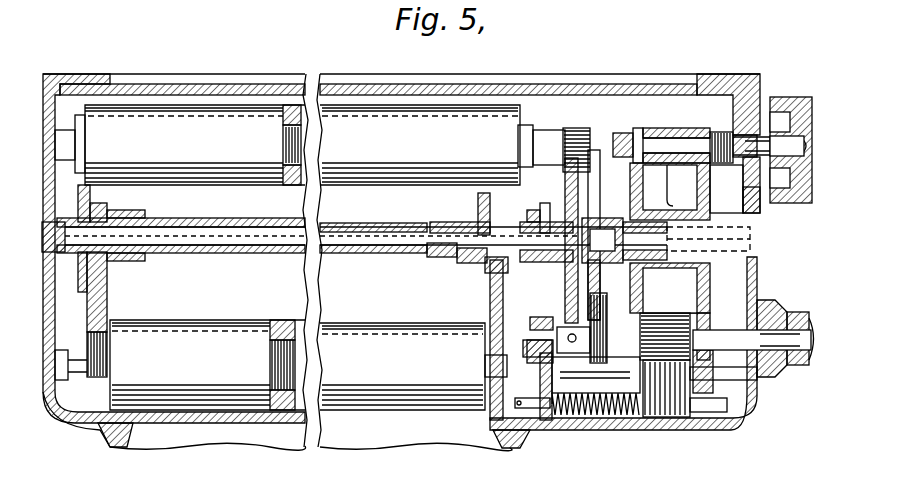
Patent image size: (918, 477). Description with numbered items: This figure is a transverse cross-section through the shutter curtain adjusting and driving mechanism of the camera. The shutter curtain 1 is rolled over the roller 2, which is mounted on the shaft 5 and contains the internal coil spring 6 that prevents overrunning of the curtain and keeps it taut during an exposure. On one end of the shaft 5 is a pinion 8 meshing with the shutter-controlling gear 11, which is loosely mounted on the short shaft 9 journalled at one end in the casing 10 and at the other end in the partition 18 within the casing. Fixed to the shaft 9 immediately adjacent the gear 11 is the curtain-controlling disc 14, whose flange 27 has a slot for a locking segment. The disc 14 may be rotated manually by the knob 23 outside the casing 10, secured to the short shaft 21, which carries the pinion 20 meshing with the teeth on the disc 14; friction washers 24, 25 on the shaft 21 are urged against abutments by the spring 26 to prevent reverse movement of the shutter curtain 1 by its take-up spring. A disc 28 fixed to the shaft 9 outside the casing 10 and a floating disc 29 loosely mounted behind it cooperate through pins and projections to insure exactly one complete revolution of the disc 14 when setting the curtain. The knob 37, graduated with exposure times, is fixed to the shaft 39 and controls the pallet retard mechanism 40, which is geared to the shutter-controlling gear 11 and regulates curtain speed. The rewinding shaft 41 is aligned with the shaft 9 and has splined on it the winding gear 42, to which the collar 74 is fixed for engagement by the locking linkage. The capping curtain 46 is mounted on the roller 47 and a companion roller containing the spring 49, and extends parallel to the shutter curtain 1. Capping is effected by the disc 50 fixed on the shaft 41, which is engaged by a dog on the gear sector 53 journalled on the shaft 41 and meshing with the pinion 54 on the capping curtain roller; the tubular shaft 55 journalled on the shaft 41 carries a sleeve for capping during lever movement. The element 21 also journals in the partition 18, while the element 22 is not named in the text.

The shutter curtain 1 is at (196, 104).
The roller 2 is at (150, 188).
The shaft 5 is at (538, 140).
The internal coil spring 6 is at (306, 136).
The pinion 8 is at (581, 130).
The short shaft 9 is at (690, 175).
The casing 10 is at (708, 84).
The shutter-controlling gear 11 is at (597, 138).
The curtain-controlling disc 14 is at (626, 290).
The partition 18 is at (490, 288).
The pinion 20 is at (621, 133).
The short shaft 21 is at (648, 130).
The tube 22 is at (684, 132).
The knob 23 is at (789, 97).
The friction washer 24 is at (712, 133).
The friction washer 25 is at (738, 135).
The spring 26 is at (720, 166).
The flange 27 is at (632, 196).
The disc 28 is at (762, 262).
The floating disc 29 is at (760, 208).
The knob 37 is at (805, 315).
The shaft 39 is at (769, 312).
The pallet retard mechanism 40 is at (657, 418).
The shaft 41 is at (381, 232).
The winding gear 42 is at (564, 300).
The capping curtain 46 is at (388, 322).
The roller 47 is at (213, 313).
The spring 49 is at (270, 368).
The disc 50 is at (80, 291).
The gear sector 53 is at (107, 297).
The pinion 54 is at (94, 378).
The tubular shaft 55 is at (266, 228).
The collar 74 is at (547, 215).